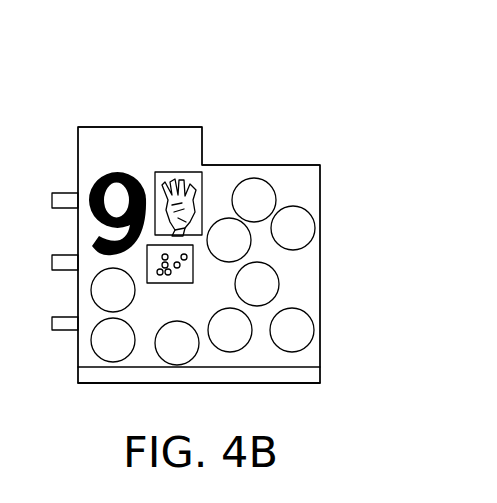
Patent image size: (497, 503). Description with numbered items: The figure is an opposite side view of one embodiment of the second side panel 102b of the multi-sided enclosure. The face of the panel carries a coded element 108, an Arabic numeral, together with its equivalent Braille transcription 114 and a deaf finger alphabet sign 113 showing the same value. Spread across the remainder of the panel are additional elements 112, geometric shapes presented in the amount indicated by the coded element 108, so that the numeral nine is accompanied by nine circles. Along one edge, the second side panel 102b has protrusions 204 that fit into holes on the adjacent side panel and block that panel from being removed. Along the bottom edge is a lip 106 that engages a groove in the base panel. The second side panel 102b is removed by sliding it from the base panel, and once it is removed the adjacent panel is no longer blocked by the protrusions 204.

The second side panel 102b is at (290, 72).
The lip 106 is at (318, 378).
The coded element 108 is at (72, 232).
The additional element 112 is at (292, 285).
The deaf finger alphabet sign 113 is at (176, 172).
The Braille transcription 114 is at (193, 262).
The protrusions 204 is at (63, 200).